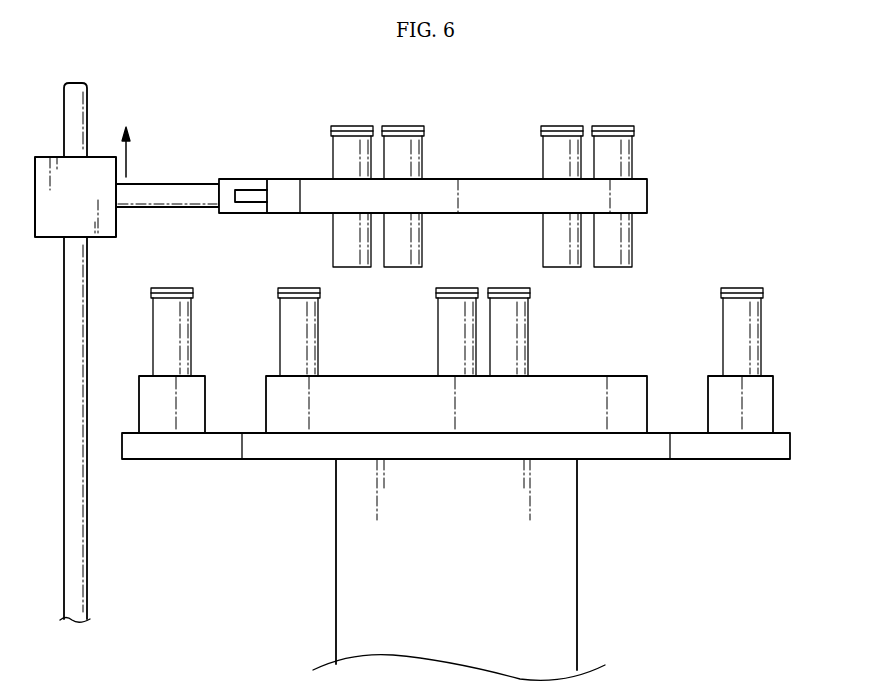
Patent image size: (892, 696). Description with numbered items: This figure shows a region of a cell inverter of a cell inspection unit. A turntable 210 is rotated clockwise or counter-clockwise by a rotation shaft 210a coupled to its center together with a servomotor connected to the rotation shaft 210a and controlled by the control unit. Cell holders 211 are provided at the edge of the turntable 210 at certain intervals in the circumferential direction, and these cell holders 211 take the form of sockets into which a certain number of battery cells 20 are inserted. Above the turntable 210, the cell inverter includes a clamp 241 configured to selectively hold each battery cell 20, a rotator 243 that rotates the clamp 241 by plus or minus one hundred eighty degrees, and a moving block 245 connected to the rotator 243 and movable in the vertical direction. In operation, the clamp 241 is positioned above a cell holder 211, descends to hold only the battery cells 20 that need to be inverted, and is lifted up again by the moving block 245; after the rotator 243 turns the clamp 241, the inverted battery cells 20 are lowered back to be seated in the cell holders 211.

The battery cell 20 is at (612, 126).
The turntable 210 is at (720, 460).
The rotation shaft 210a is at (578, 528).
The cell holder 211 is at (625, 375).
The clamp 241 is at (487, 178).
The rotator 243 is at (176, 184).
The moving block 245 is at (44, 156).